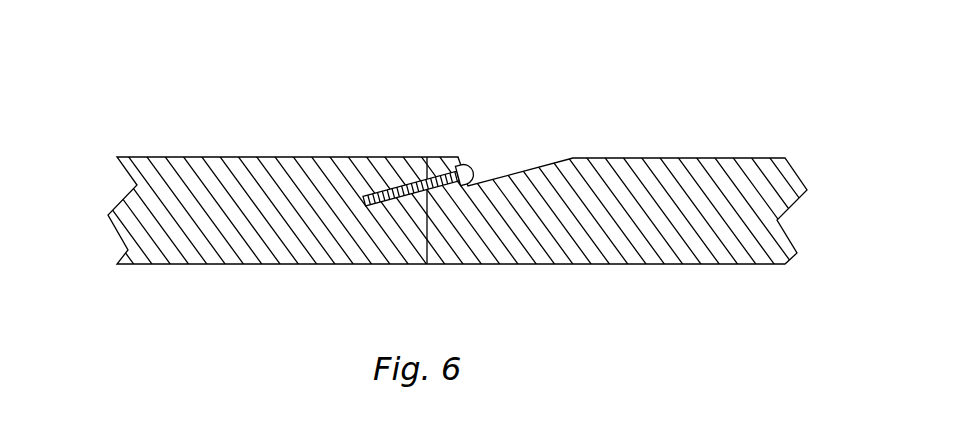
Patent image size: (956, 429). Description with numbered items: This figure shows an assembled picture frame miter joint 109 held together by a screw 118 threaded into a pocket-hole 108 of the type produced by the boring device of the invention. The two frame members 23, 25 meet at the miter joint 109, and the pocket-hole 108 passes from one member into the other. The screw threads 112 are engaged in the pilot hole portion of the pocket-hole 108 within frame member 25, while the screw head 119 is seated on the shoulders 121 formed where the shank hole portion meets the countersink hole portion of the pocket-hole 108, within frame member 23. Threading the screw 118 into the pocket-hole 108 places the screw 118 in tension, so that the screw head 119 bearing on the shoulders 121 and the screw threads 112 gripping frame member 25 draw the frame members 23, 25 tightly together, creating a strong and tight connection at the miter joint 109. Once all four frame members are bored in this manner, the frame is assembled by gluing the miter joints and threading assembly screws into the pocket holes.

The frame member 23 is at (567, 237).
The frame member 25 is at (257, 245).
The pocket-hole 108 is at (427, 151).
The miter joint 109 is at (420, 243).
The screw threads 112 is at (378, 207).
The screw 118 is at (473, 141).
The screw head 119 is at (471, 178).
The shoulders 121 is at (461, 163).